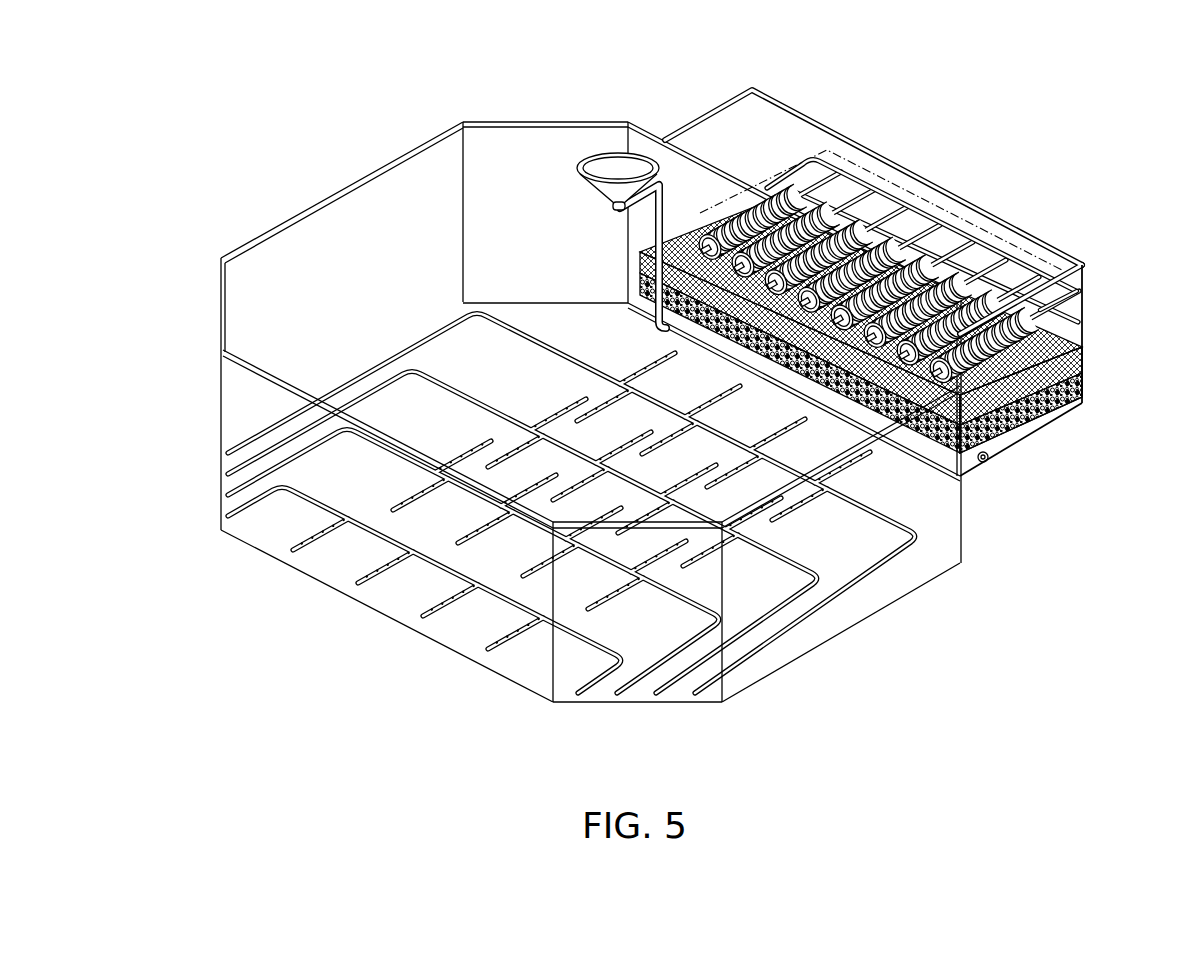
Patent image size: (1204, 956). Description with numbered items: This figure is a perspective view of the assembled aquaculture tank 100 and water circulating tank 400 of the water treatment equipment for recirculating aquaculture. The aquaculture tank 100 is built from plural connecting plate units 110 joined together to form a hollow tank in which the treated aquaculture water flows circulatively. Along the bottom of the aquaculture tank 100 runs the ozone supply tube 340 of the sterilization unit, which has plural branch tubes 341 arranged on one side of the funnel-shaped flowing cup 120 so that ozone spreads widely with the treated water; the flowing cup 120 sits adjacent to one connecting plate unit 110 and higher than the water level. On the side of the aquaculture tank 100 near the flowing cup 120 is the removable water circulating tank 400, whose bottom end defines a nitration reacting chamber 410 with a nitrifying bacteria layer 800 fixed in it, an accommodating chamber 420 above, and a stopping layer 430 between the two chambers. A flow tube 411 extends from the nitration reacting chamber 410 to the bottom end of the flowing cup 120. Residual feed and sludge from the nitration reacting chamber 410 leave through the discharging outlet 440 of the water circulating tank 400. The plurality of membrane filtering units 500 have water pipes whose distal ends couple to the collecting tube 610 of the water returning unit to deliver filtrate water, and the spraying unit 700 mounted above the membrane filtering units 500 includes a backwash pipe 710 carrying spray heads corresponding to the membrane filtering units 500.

The aquaculture tank 100 is at (586, 369).
The connecting plate unit 110 is at (400, 188).
The flowing cup 120 is at (606, 158).
The flow tube 411 is at (668, 196).
The membrane filtering unit 500 is at (791, 168).
The spraying unit 700 is at (831, 150).
The water circulating tank 400 is at (917, 152).
The accommodating chamber 420 is at (968, 222).
The backwash pipe 710 is at (1084, 293).
The collecting tube 610 is at (1084, 322).
The stopping layer 430 is at (1083, 348).
The nitration reacting chamber 410 is at (1074, 400).
The nitrifying bacteria layer 800 is at (1034, 436).
The discharging outlet 440 is at (984, 468).
The ozone supply tube 340 is at (243, 514).
The branch tube 341 is at (385, 572).